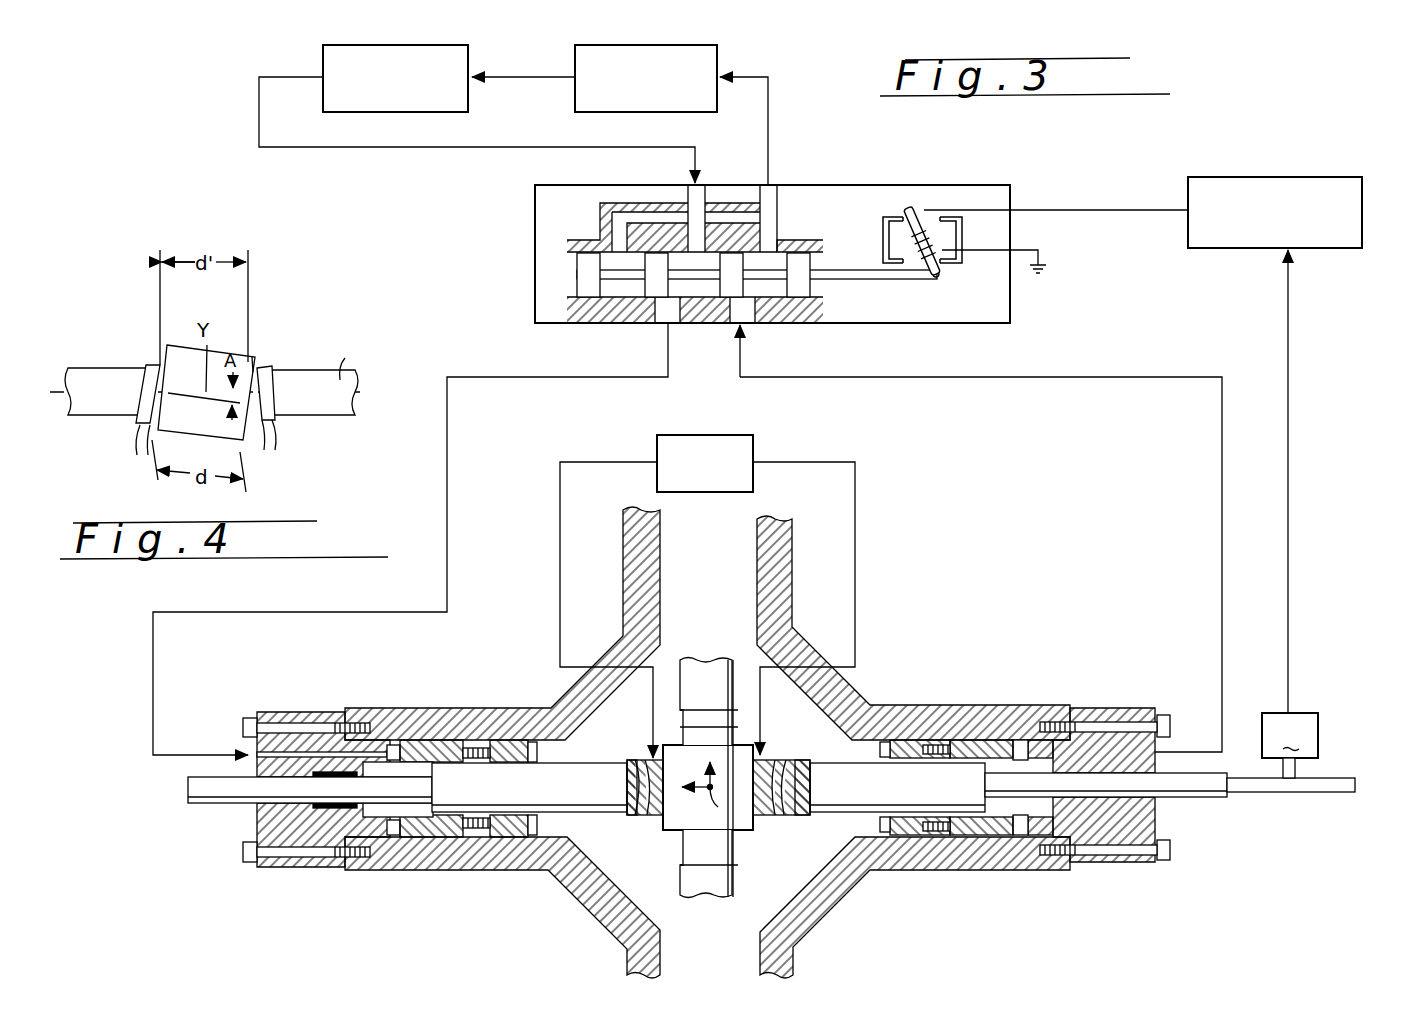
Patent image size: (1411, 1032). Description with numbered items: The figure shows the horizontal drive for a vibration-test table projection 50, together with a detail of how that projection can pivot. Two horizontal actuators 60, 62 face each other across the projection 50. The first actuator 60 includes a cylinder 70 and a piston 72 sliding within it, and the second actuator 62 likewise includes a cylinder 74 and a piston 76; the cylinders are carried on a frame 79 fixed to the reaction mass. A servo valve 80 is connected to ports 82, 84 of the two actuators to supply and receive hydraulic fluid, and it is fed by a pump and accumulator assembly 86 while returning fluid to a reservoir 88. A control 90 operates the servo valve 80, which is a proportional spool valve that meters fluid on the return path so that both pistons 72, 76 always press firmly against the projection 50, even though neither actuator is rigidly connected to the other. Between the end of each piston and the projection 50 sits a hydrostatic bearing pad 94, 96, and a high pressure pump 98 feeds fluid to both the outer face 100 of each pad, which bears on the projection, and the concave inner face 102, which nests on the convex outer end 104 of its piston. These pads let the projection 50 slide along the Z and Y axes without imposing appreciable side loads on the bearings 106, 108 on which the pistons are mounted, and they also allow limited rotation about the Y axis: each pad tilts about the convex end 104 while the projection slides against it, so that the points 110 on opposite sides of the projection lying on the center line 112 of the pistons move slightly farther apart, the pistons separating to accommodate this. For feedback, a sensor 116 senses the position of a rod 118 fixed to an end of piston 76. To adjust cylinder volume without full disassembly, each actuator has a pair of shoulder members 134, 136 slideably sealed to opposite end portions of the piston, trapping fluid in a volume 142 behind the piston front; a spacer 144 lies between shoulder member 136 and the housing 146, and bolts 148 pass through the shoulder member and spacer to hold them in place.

In FIG. 3, the projection 50 is at (675, 835).
In FIG. 4, the projection 50 is at (240, 355).
In FIG. 3, the horizontal actuator 60 is at (451, 718).
In FIG. 3, the horizontal actuator 62 is at (991, 712).
In FIG. 3, the cylinder 70 is at (415, 745).
In FIG. 3, the piston 72 is at (407, 787).
In FIG. 4, the piston 72 is at (72, 415).
In FIG. 3, the cylinder 74 is at (1000, 745).
In FIG. 3, the piston 76 is at (897, 787).
In FIG. 4, the piston 76 is at (345, 415).
In FIG. 3, the frame 79 is at (840, 886).
In FIG. 3, the servo valve 80 is at (958, 160).
In FIG. 3, the port 82 is at (262, 742).
In FIG. 3, the port 84 is at (1135, 750).
In FIG. 3, the pump and accumulator assembly 86 is at (470, 112).
In FIG. 3, the reservoir 88 is at (580, 112).
In FIG. 3, the control 90 is at (1262, 178).
In FIG. 3, the hydrostatic bearing pad 94 is at (651, 757).
In FIG. 4, the hydrostatic bearing pad 94 is at (155, 425).
In FIG. 3, the hydrostatic bearing pad 96 is at (771, 757).
In FIG. 4, the hydrostatic bearing pad 96 is at (258, 410).
In FIG. 3, the high pressure pump 98 is at (707, 435).
In FIG. 3, the outer face 100 is at (757, 820).
In FIG. 3, the inner face 102 is at (785, 812).
In FIG. 3, the outer end 104 is at (650, 815).
In FIG. 4, the outer end 104 is at (148, 368).
In FIG. 3, the bearing 106 is at (510, 838).
In FIG. 3, the bearing 108 is at (330, 815).
In FIG. 4, the points 110 is at (145, 430).
In FIG. 4, the center line 112 is at (340, 380).
In FIG. 3, the sensor 116 is at (1290, 745).
In FIG. 3, the rod 118 is at (1271, 793).
In FIG. 3, the shoulder member 134 is at (908, 740).
In FIG. 3, the shoulder member 136 is at (1135, 862).
In FIG. 3, the volume 142 is at (1025, 805).
In FIG. 3, the spacer 144 is at (1090, 858).
In FIG. 3, the housing 146 is at (960, 860).
In FIG. 3, the bolts 148 is at (1170, 852).